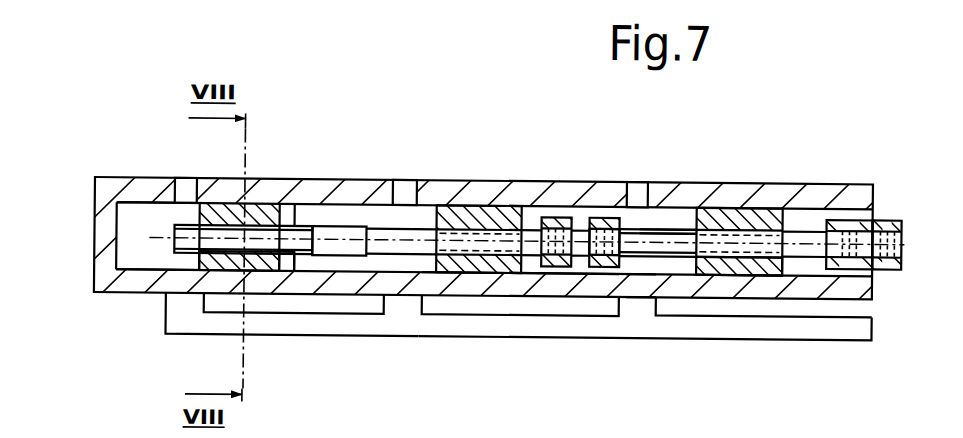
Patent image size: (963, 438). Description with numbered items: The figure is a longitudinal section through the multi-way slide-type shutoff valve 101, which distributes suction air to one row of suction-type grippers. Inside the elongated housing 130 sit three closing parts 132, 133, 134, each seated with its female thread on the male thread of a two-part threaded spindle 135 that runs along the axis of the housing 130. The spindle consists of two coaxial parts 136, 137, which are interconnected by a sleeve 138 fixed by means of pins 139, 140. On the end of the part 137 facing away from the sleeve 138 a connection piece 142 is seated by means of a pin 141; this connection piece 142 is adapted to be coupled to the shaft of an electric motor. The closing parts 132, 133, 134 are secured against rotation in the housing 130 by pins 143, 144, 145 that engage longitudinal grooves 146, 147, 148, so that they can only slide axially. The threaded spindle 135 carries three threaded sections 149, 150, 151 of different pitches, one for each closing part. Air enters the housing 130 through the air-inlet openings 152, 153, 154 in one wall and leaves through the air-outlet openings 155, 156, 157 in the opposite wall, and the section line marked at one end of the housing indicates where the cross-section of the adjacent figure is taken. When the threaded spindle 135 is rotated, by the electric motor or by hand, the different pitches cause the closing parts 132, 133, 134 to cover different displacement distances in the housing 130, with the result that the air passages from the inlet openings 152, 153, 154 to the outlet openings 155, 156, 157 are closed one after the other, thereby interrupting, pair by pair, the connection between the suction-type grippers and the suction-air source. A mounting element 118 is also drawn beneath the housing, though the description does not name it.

The multi-way slide-type shutoff valve 101 is at (125, 322).
The mounting flange 118 is at (168, 334).
The housing 130 is at (104, 257).
The closing part 132 is at (265, 260).
The closing part 133 is at (468, 268).
The closing part 134 is at (750, 270).
The two-part threaded spindle 135 is at (150, 237).
The part of threaded spindle 136 is at (340, 248).
The part of threaded spindle 137 is at (670, 250).
The sleeve 138 is at (572, 214).
The pin 139 is at (538, 212).
The pin 140 is at (603, 214).
The pin 141 is at (834, 213).
The connection piece 142 is at (896, 213).
The pin 143 is at (256, 200).
The pin 144 is at (478, 220).
The pin 145 is at (742, 230).
The longitudinal groove 146 is at (303, 268).
The longitudinal groove 147 is at (512, 258).
The longitudinal groove 148 is at (774, 284).
The threaded section 149 is at (295, 186).
The threaded section 150 is at (367, 184).
The threaded section 151 is at (684, 219).
The air-inlet opening 152 is at (185, 186).
The air-inlet opening 153 is at (402, 183).
The air-inlet opening 154 is at (637, 195).
The air-outlet opening 155 is at (183, 281).
The air-outlet opening 156 is at (408, 275).
The air-outlet opening 157 is at (636, 275).